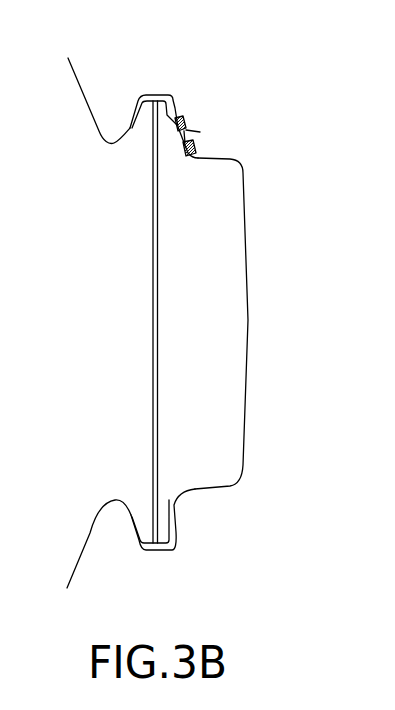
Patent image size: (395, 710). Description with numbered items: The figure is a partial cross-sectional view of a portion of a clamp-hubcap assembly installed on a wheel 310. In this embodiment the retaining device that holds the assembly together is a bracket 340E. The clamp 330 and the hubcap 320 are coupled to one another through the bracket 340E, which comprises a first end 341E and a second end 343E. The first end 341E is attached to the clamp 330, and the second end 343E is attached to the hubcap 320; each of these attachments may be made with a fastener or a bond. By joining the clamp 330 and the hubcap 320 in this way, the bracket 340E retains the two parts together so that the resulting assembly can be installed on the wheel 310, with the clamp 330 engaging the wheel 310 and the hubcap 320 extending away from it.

The wheel 310 is at (80, 90).
The hubcap 320 is at (248, 297).
The clamp 330 is at (155, 94).
The first end 341E is at (185, 117).
The bracket 340E is at (188, 134).
The second end 343E is at (188, 148).